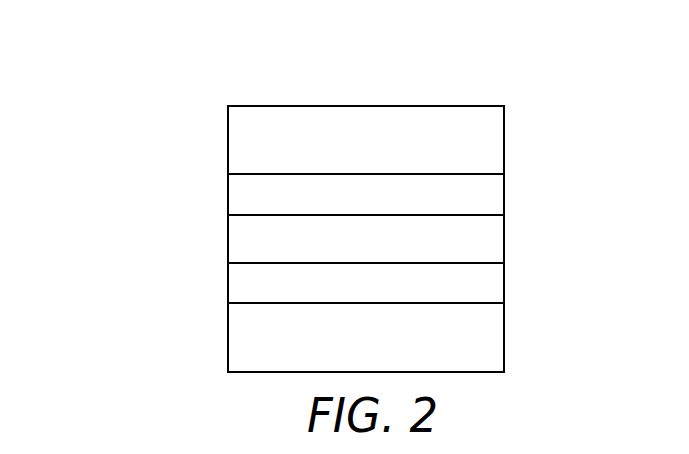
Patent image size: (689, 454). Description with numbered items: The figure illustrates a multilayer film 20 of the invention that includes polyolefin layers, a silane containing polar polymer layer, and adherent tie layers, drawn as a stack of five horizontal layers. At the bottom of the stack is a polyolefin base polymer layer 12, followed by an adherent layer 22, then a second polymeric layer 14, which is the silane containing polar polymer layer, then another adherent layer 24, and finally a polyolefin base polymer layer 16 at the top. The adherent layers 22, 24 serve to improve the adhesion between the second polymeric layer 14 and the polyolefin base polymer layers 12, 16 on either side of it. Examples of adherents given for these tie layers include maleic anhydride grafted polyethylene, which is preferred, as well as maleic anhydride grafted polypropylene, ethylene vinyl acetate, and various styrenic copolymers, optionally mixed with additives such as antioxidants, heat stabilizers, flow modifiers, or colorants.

The multilayer film 20 is at (105, 47).
The polyolefin base polymer layer 16 is at (265, 141).
The adherent layer 24 is at (482, 198).
The second polymeric layer 14 is at (245, 251).
The adherent layer 22 is at (485, 283).
The polyolefin base polymer layer 12 is at (237, 344).